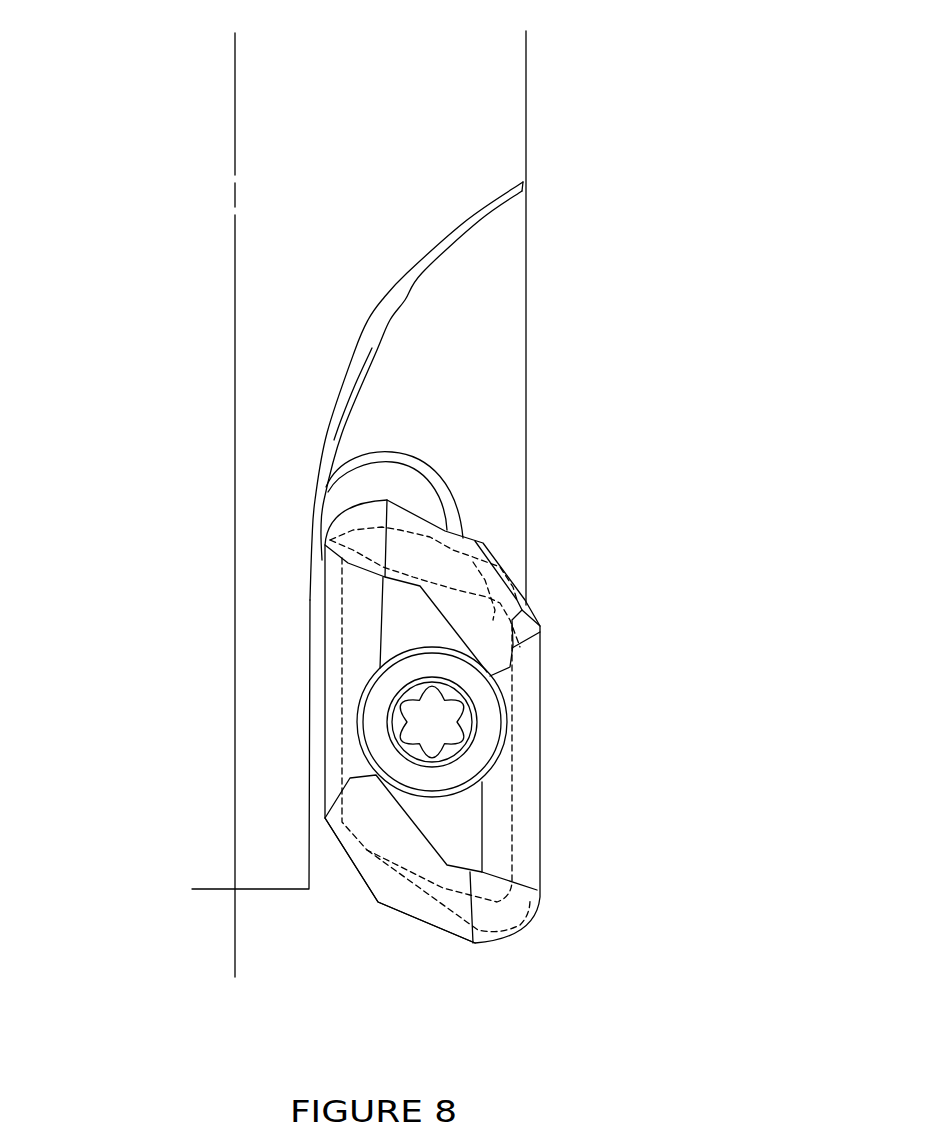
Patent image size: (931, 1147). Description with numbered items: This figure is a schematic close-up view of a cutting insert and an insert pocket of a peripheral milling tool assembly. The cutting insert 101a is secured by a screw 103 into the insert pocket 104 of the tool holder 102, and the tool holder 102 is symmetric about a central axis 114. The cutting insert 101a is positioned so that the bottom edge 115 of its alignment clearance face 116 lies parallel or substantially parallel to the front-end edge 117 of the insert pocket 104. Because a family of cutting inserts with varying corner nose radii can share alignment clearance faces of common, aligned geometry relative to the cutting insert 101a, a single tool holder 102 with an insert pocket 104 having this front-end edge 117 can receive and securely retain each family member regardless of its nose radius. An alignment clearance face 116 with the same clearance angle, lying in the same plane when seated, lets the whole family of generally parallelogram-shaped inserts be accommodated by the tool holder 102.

The central axis 114 is at (235, 102).
The tool holder 102 is at (459, 128).
The insert pocket 104 is at (482, 410).
The cutting insert 101a is at (573, 693).
The screw 103 is at (428, 727).
The front-end edge 117 is at (423, 873).
The alignment clearance face 116 is at (418, 892).
The bottom edge 115 is at (440, 888).